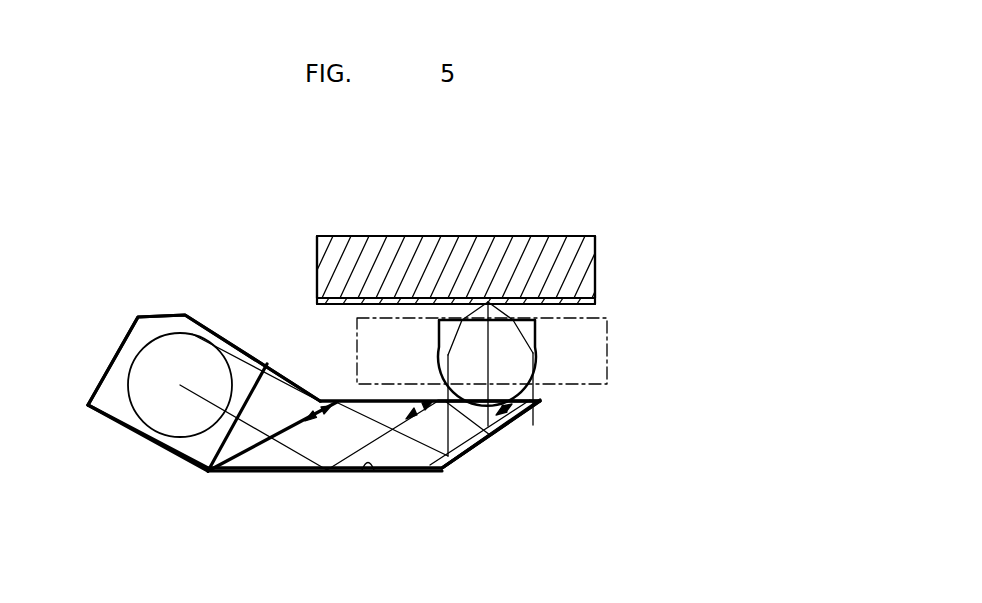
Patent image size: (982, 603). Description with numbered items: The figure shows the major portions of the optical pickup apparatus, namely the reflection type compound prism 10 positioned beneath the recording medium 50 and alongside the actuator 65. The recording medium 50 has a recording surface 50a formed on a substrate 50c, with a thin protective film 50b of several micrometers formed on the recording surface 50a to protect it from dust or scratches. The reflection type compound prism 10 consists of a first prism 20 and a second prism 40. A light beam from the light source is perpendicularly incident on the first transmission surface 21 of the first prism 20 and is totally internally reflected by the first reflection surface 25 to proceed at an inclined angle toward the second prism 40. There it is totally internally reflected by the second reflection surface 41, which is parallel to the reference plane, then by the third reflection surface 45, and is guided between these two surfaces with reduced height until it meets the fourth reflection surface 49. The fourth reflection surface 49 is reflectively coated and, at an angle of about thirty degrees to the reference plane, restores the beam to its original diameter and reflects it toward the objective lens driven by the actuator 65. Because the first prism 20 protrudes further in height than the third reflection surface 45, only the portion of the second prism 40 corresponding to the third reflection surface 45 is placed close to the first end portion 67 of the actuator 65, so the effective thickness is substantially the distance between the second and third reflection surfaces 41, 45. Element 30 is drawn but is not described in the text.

The reflection type compound prism 10 is at (136, 296).
The first prism 20 is at (105, 382).
The first transmission surface 21 is at (203, 411).
The first reflection surface 25 is at (115, 408).
The reflecting mirror 30 is at (237, 466).
The second prism 40 is at (388, 458).
The second reflection surface 41 is at (365, 470).
The third reflection surface 45 is at (470, 401).
The fourth reflection surface 49 is at (516, 414).
The recording medium 50 is at (566, 225).
The recording surface 50a is at (582, 304).
The protective film 50b is at (596, 300).
The substrate 50c is at (596, 250).
The actuator 65 is at (587, 368).
The first end portion 67 is at (573, 385).